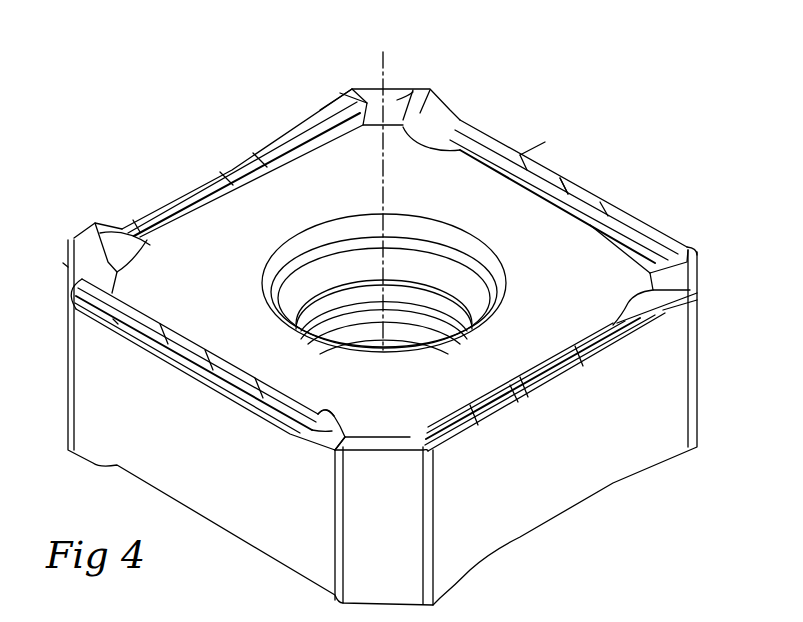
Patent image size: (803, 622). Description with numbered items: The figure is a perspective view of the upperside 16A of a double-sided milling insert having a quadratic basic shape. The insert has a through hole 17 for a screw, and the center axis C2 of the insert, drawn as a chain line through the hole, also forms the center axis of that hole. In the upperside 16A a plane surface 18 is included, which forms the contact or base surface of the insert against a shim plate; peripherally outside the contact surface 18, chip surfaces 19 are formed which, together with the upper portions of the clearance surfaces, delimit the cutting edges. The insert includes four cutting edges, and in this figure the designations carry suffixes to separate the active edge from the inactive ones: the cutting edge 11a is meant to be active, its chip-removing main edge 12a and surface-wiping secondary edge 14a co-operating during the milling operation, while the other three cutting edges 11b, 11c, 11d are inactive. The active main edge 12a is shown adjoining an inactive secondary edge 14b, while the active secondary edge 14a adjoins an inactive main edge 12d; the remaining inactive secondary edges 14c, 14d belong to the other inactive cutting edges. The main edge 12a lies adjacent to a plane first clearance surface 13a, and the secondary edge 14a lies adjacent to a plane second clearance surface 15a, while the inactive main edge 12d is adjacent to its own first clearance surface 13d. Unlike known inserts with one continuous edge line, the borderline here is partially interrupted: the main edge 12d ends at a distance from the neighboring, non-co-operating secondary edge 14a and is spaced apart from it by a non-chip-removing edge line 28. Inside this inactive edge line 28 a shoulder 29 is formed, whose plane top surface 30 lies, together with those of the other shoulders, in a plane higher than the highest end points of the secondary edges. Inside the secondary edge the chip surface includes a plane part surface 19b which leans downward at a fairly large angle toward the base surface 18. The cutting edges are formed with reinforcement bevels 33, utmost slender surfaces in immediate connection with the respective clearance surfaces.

The center axis C2 is at (383, 57).
The active cutting edge 11a is at (562, 385).
The inactive cutting edge 11b is at (570, 180).
The inactive cutting edge 11c is at (230, 160).
The inactive cutting edge 11d is at (183, 370).
The active main edge 12a is at (508, 432).
The inactive main edge 12d is at (218, 397).
The first clearance surface 13a is at (565, 427).
The first clearance surface 13d is at (205, 421).
The active secondary edge 14a is at (380, 450).
The inactive secondary edge 14b is at (697, 267).
The inactive secondary edge 14c is at (372, 88).
The inactive secondary edge 14d is at (67, 257).
The second clearance surface 15a is at (384, 521).
The upperside 16A is at (537, 152).
The through hole 17 is at (425, 257).
The plane surface 18 is at (552, 252).
The chip surfaces 19 is at (583, 207).
The plane part surface 19b is at (397, 100).
The non-chip-removing edge line 28 is at (315, 437).
The shoulder 29 is at (327, 413).
The top surface 30 is at (440, 102).
The reinforcement bevels 33 is at (65, 265).